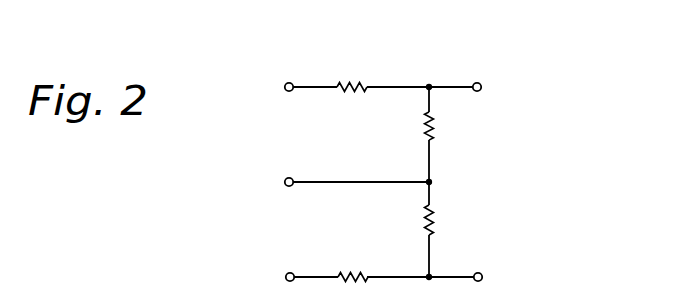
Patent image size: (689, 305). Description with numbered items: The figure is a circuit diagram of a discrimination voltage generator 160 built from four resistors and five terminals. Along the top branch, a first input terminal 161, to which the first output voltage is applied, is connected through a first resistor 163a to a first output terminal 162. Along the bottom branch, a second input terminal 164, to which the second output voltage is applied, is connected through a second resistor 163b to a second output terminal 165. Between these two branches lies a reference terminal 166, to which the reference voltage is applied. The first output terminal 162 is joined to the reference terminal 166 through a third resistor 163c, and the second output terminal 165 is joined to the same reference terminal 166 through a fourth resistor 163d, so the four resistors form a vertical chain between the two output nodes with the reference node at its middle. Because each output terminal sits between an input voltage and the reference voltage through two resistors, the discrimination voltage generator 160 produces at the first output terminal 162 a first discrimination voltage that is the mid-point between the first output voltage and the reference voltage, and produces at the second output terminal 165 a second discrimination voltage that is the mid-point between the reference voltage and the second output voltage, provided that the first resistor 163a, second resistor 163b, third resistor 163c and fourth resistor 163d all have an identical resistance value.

The discrimination voltage generator 160 is at (463, 41).
The first input terminal 161 is at (286, 83).
The first output terminal 162 is at (480, 81).
The first resistor 163a is at (356, 83).
The second resistor 163b is at (355, 273).
The third resistor 163c is at (438, 119).
The fourth resistor 163d is at (438, 213).
The second input terminal 164 is at (287, 273).
The second output terminal 165 is at (483, 273).
The reference terminal 166 is at (287, 178).